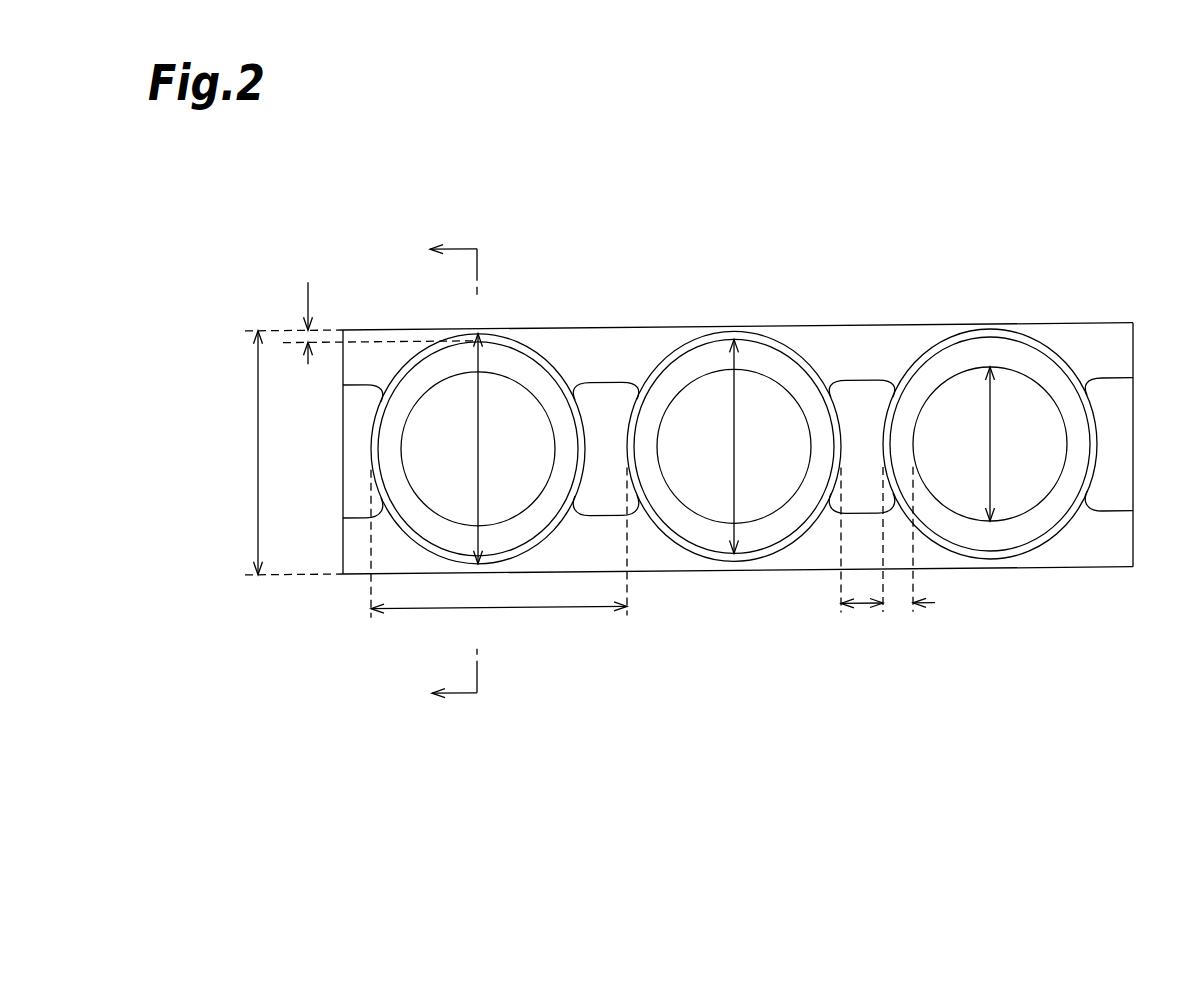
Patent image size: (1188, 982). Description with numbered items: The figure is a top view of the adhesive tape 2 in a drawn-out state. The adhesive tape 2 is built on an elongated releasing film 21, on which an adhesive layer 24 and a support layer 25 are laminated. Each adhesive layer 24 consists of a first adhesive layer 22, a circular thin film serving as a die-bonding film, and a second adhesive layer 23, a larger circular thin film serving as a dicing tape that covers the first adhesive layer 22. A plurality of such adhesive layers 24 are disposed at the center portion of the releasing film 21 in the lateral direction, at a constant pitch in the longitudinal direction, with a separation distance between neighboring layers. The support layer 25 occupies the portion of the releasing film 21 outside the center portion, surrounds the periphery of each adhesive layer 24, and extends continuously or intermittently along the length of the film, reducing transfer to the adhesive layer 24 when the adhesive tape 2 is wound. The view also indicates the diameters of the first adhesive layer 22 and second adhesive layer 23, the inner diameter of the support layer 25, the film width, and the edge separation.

The adhesive tape 2 is at (1090, 285).
The releasing film 21 is at (1107, 405).
The first adhesive layer 22 is at (958, 407).
The second adhesive layer 23 is at (990, 358).
The adhesive layer 24 is at (993, 237).
The support layer 25 is at (1063, 340).